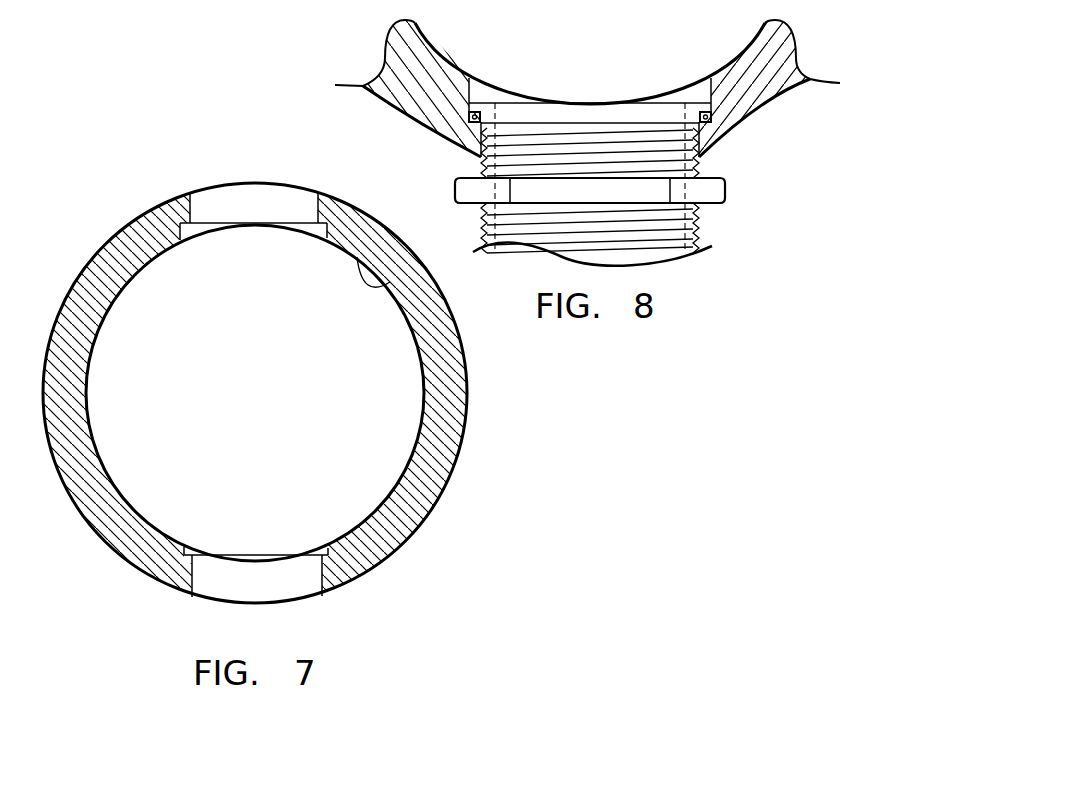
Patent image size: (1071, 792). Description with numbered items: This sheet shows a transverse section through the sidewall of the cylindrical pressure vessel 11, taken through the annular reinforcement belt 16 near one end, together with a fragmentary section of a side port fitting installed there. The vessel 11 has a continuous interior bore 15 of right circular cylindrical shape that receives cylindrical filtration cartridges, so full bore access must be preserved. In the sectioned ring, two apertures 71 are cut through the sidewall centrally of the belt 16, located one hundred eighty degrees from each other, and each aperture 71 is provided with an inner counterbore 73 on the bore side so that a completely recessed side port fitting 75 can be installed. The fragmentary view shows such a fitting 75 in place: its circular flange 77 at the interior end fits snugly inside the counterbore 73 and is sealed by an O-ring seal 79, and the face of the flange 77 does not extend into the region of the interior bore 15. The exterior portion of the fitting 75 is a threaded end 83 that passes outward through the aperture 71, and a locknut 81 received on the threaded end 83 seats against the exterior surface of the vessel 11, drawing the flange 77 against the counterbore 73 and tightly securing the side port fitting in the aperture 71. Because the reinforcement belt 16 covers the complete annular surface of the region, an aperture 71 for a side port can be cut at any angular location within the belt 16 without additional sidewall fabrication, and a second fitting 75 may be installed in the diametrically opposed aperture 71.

In FIG. 7, the pressure vessel 11 is at (255, 385).
In FIG. 8, the pressure vessel 11 is at (587, 141).
In FIG. 7, the interior bore 15 is at (385, 270).
In FIG. 8, the interior bore 15 is at (743, 53).
In FIG. 7, the reinforcement belt 16 is at (110, 266).
In FIG. 8, the reinforcement belt 16 is at (420, 72).
In FIG. 7, the aperture 71 is at (190, 213).
In FIG. 7, the inner counterbore 73 is at (195, 232).
In FIG. 8, the inner counterbore 73 is at (472, 92).
In FIG. 8, the side port fitting 75 is at (714, 237).
In FIG. 8, the circular flange 77 is at (500, 107).
In FIG. 8, the O-ring seal 79 is at (700, 117).
In FIG. 8, the locknut 81 is at (707, 190).
In FIG. 8, the threaded end 83 is at (547, 230).